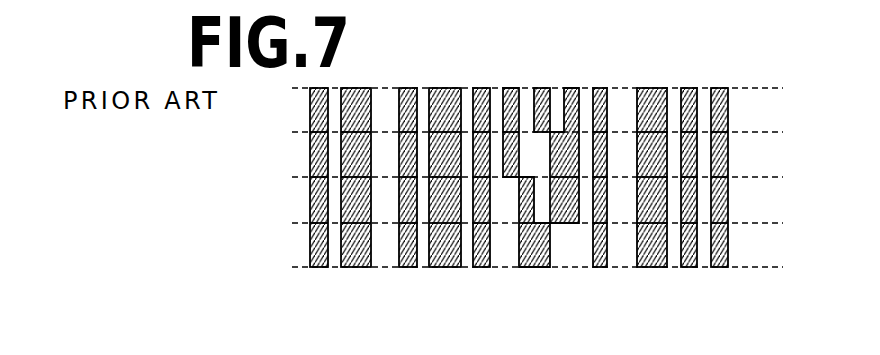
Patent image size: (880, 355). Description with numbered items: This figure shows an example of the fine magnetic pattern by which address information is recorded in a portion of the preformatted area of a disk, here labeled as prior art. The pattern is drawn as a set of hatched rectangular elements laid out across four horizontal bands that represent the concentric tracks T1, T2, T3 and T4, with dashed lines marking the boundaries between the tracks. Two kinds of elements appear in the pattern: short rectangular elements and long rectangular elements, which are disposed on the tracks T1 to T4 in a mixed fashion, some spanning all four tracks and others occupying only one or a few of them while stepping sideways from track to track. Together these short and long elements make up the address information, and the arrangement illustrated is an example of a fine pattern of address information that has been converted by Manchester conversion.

The concentric track T1 is at (515, 107).
The concentric track T2 is at (515, 150).
The concentric track T3 is at (515, 196).
The concentric track T4 is at (515, 245).